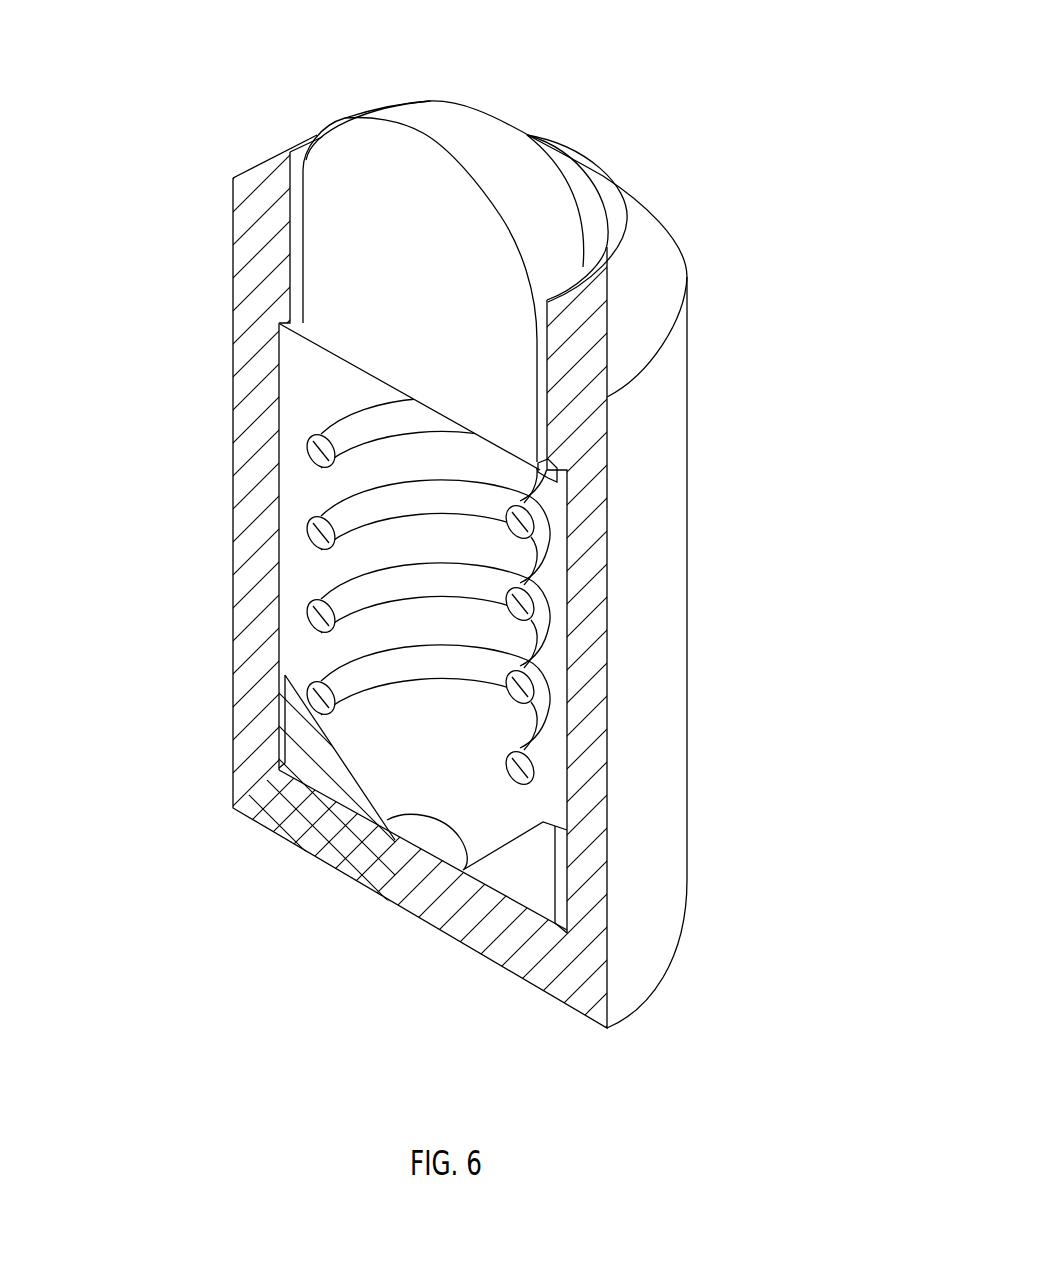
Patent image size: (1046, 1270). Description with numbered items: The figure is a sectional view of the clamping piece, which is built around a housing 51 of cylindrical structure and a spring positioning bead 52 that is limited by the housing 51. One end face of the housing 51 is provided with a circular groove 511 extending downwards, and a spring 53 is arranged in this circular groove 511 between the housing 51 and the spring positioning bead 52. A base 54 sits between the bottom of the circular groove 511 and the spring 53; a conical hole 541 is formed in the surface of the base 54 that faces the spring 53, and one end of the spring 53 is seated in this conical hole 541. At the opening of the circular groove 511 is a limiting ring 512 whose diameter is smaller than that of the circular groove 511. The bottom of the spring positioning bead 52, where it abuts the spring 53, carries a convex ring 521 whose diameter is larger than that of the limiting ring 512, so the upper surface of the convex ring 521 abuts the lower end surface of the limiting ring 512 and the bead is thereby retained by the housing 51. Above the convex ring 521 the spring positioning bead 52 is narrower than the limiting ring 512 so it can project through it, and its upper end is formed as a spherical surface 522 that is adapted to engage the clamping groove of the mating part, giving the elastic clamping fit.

The housing 51 is at (655, 615).
The circular groove 511 is at (305, 400).
The limiting ring 512 is at (292, 280).
The spring positioning bead 52 is at (400, 306).
The convex ring 521 is at (558, 466).
The spherical surface 522 is at (425, 131).
The spring 53 is at (325, 530).
The base 54 is at (316, 752).
The conical hole 541 is at (440, 790).